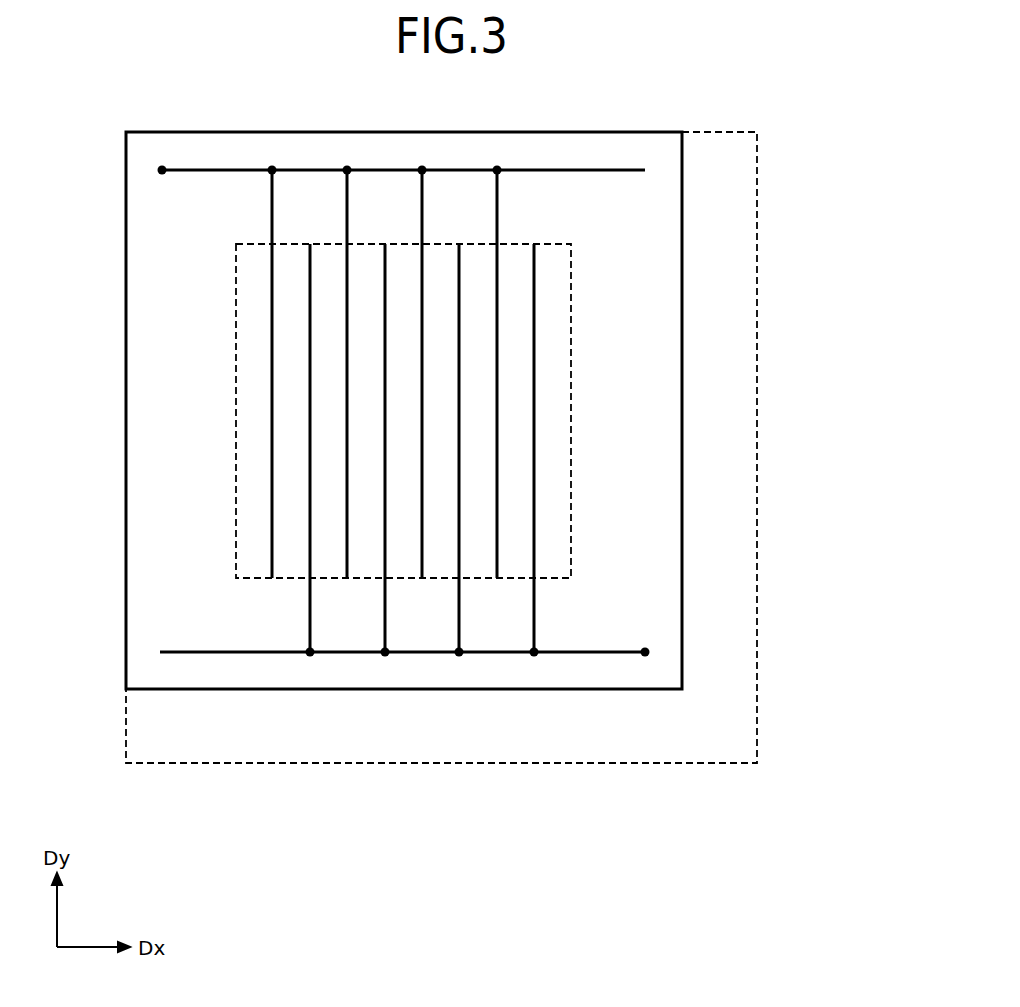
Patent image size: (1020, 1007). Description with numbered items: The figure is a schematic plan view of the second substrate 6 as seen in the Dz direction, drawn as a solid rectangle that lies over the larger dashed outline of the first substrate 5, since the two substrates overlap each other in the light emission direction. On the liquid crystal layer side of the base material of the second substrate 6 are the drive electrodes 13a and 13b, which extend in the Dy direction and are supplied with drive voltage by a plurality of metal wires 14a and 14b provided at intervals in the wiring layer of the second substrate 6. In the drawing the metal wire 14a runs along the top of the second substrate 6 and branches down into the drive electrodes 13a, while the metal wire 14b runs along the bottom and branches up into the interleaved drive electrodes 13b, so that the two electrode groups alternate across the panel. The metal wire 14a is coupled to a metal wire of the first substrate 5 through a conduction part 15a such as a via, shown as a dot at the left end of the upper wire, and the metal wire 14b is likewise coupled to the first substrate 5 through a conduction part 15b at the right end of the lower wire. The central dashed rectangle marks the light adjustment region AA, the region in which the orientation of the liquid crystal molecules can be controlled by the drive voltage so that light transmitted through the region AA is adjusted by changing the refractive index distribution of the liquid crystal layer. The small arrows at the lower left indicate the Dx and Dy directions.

The first substrate 5 is at (707, 132).
The second substrate 6 is at (233, 132).
The light adjustment region AA is at (571, 413).
The drive electrode 13a is at (497, 471).
The drive electrode 13b is at (534, 520).
The metal wire 14a is at (497, 168).
The metal wire 14b is at (593, 654).
The conduction part 15a is at (162, 168).
The conduction part 15b is at (650, 652).